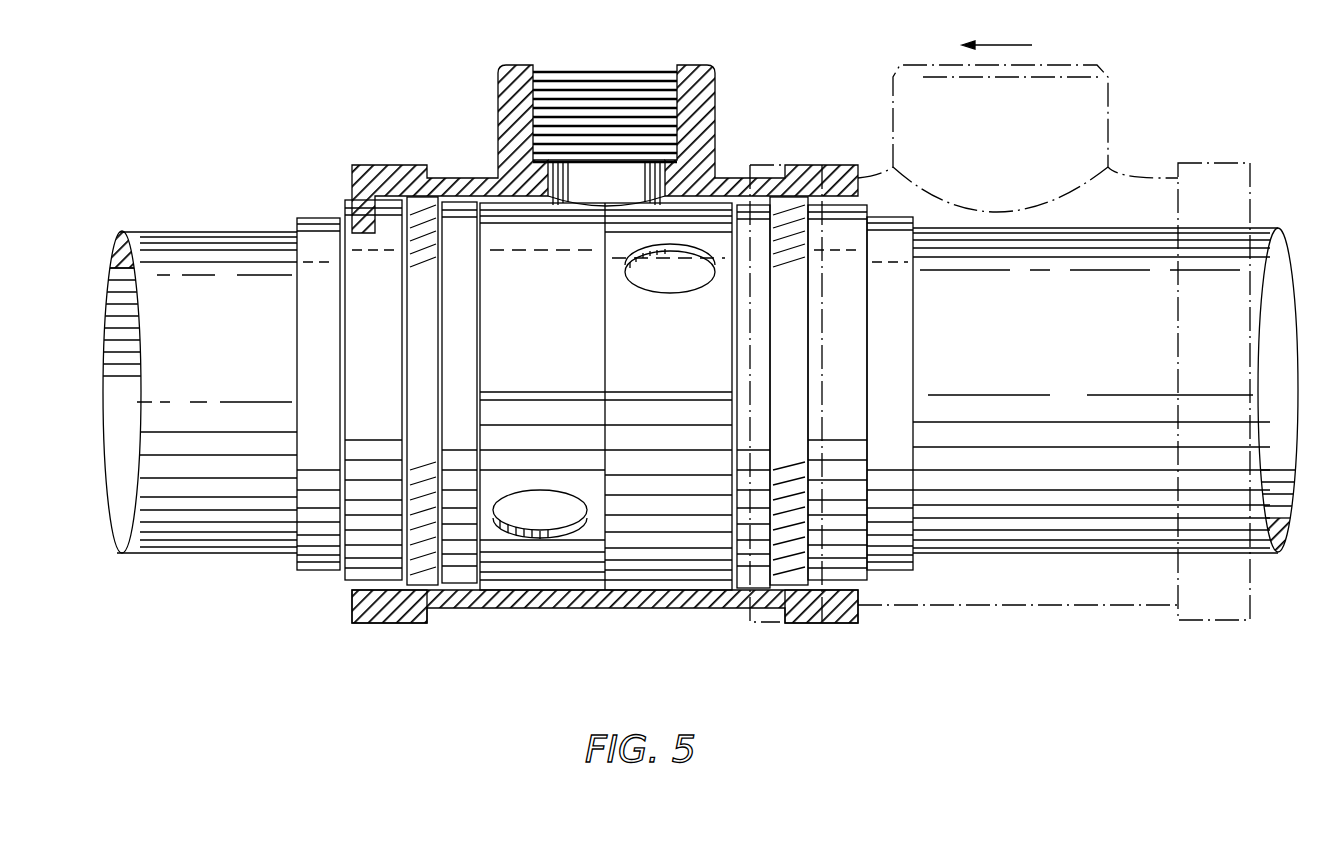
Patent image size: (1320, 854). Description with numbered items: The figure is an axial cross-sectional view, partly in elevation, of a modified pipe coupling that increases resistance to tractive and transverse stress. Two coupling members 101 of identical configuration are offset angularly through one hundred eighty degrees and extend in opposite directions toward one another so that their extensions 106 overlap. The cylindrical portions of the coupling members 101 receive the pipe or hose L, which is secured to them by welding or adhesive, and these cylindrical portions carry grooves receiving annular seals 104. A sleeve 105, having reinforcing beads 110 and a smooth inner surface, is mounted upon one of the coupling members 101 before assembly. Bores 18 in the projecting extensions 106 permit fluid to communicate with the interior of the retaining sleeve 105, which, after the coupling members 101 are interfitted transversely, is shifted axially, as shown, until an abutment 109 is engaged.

The pipe or hose L is at (158, 232).
The coupling members 101 is at (300, 218).
The annular seals 104 is at (408, 350).
The sleeve 105 is at (607, 610).
The extensions 106 is at (540, 380).
The abutment 109 is at (352, 185).
The reinforcing beads 110 is at (388, 628).
The bores 18 is at (672, 285).